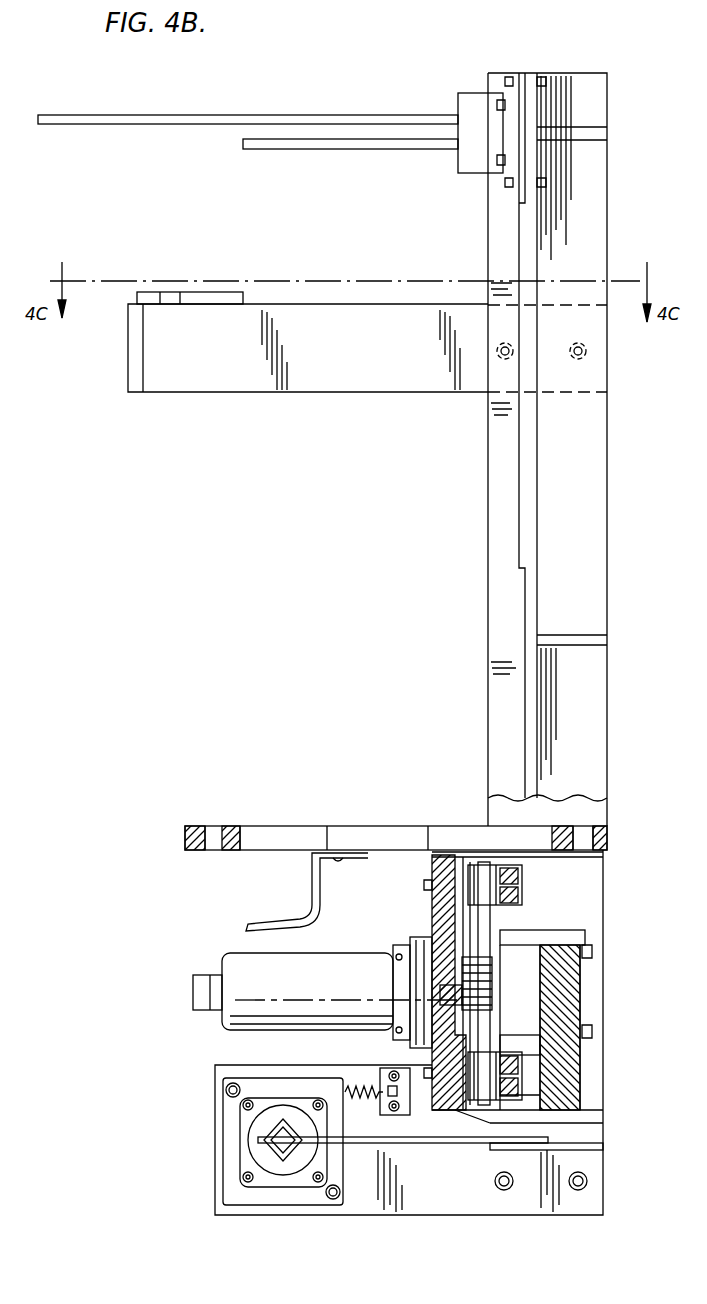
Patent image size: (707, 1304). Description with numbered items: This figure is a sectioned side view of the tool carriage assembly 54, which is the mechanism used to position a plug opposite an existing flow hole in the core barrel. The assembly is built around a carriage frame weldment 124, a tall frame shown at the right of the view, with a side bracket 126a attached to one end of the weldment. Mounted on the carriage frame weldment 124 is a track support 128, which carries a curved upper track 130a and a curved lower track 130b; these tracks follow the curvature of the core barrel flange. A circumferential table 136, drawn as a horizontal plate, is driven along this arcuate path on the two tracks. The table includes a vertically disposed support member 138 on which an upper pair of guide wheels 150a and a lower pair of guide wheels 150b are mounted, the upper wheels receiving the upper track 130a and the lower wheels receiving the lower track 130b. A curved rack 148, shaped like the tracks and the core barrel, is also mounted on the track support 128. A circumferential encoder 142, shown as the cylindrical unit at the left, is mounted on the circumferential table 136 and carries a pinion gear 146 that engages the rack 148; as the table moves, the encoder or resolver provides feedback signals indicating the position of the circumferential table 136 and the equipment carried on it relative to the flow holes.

The tool carriage assembly 54 is at (289, 112).
The carriage frame weldment 124 is at (497, 481).
The side bracket 126a is at (243, 380).
The circumferential table 136 is at (284, 827).
The circumferential encoder 142 is at (262, 965).
The pinion gear 146 is at (430, 998).
The rack 148 is at (493, 980).
The upper pair of guide wheels 150a is at (495, 858).
The lower pair of guide wheels 150b is at (490, 1106).
The upper track 130a is at (468, 926).
The lower track 130b is at (524, 1050).
The track support 128 is at (523, 945).
The support member 138 is at (470, 1110).